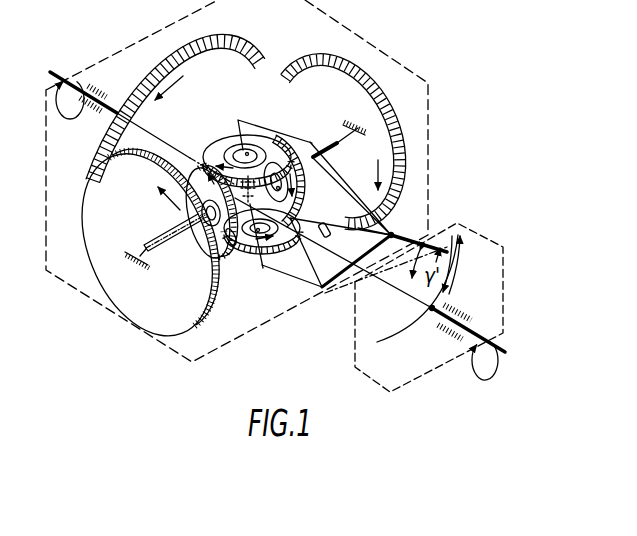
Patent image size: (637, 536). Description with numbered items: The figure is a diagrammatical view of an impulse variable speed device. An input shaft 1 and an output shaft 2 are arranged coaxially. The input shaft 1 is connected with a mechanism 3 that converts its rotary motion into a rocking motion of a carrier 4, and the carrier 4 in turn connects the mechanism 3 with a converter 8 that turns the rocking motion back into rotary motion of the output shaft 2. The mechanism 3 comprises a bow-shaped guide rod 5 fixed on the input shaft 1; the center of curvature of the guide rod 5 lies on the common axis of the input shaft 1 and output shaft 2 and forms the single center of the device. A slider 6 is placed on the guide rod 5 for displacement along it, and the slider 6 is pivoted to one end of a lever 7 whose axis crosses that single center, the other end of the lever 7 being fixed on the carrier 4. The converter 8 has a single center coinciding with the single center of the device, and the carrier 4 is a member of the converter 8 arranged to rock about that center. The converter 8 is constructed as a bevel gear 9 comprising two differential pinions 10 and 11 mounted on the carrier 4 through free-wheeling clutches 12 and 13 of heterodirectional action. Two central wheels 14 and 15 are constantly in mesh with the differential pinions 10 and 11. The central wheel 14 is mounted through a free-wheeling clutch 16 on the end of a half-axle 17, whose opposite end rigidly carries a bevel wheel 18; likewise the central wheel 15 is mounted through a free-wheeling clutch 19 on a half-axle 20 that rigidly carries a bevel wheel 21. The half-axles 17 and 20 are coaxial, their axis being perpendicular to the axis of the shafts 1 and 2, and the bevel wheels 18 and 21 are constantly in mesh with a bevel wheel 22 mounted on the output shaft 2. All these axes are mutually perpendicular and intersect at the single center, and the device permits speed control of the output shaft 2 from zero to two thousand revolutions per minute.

The input shaft 1 is at (490, 357).
The output shaft 2 is at (67, 70).
The mechanism for converting rotary motion into rocking motion 3 is at (507, 244).
The carrier 4 is at (312, 289).
The bow-shaped guide rod 5 is at (394, 344).
The slider 6 is at (466, 244).
The lever 7 is at (420, 242).
The converter 8 is at (70, 296).
The bevel gear 9 is at (300, 230).
The differential pinion 10 is at (262, 145).
The differential pinion 11 is at (249, 268).
The free-wheeling clutch 12 is at (240, 152).
The free-wheeling clutch 13 is at (261, 264).
The central wheel 14 is at (214, 268).
The central wheel 15 is at (285, 138).
The free-wheeling clutch 16 is at (207, 238).
The half-axle 17 is at (164, 234).
The bevel wheel 18 is at (172, 327).
The free-wheeling clutch 19 is at (306, 183).
The half-axle 20 is at (318, 143).
The bevel wheel 21 is at (385, 119).
The bevel wheel 22 is at (247, 45).